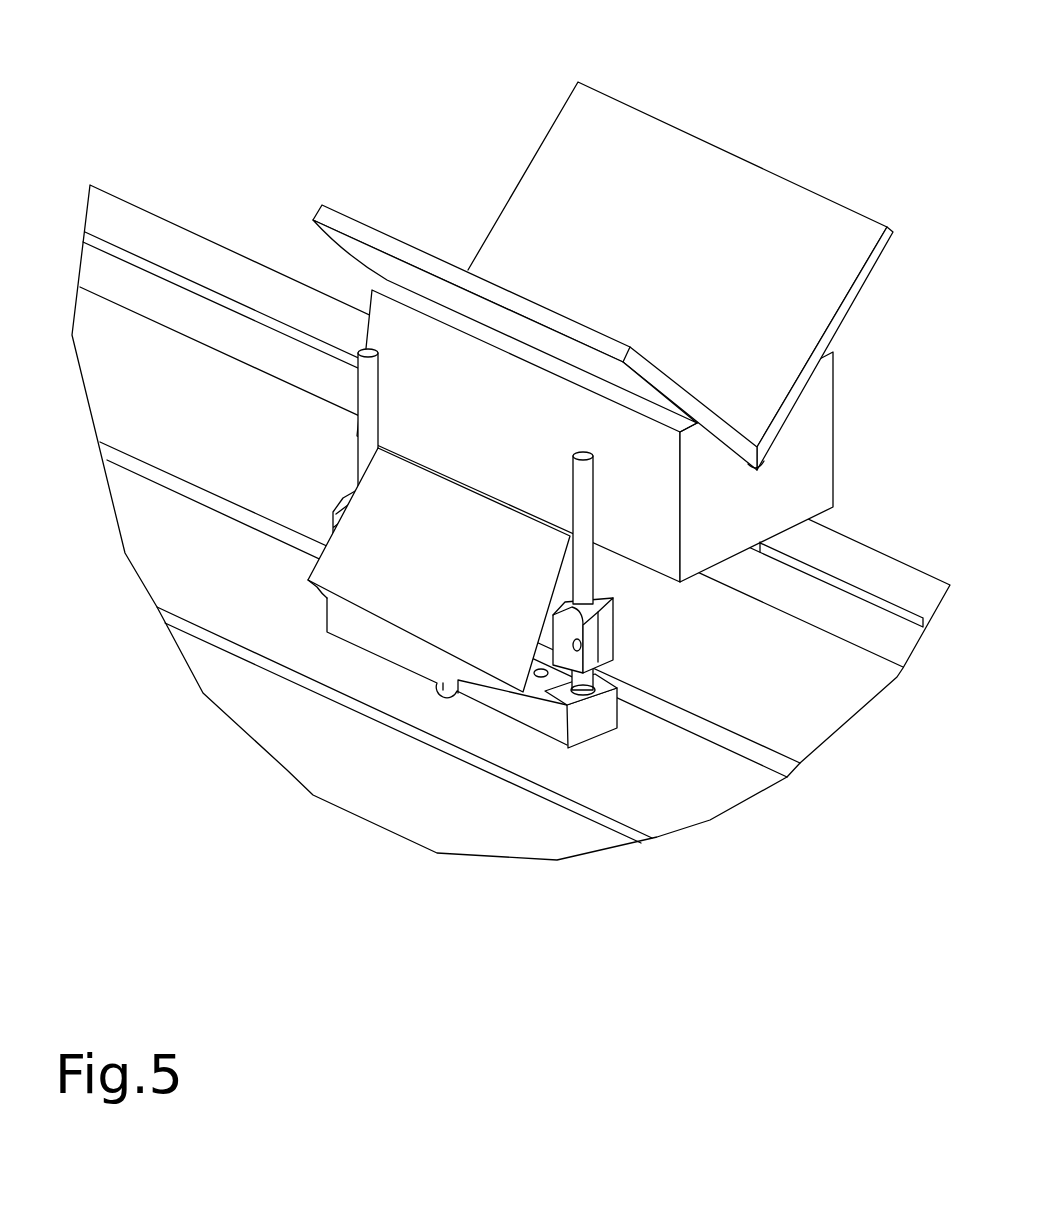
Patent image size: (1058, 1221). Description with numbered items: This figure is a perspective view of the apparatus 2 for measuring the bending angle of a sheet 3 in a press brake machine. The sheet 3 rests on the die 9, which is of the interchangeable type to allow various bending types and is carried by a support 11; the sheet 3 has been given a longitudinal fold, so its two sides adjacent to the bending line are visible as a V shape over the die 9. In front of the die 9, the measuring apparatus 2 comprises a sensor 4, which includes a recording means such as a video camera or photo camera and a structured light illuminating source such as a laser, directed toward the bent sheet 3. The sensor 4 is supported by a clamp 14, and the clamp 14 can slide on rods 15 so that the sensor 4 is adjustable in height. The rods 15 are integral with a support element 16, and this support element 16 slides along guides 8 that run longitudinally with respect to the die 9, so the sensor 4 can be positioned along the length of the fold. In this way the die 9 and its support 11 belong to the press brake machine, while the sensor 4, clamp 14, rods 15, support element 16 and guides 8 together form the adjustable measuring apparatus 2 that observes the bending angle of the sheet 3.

The apparatus 2 is at (354, 88).
The sheet 3 is at (575, 173).
The sensor 4 is at (463, 515).
The guides 8 is at (708, 800).
The die 9 is at (803, 447).
The support 11 is at (870, 562).
The clamp 14 is at (613, 636).
The rods 15 is at (635, 571).
The support element 16 is at (593, 727).